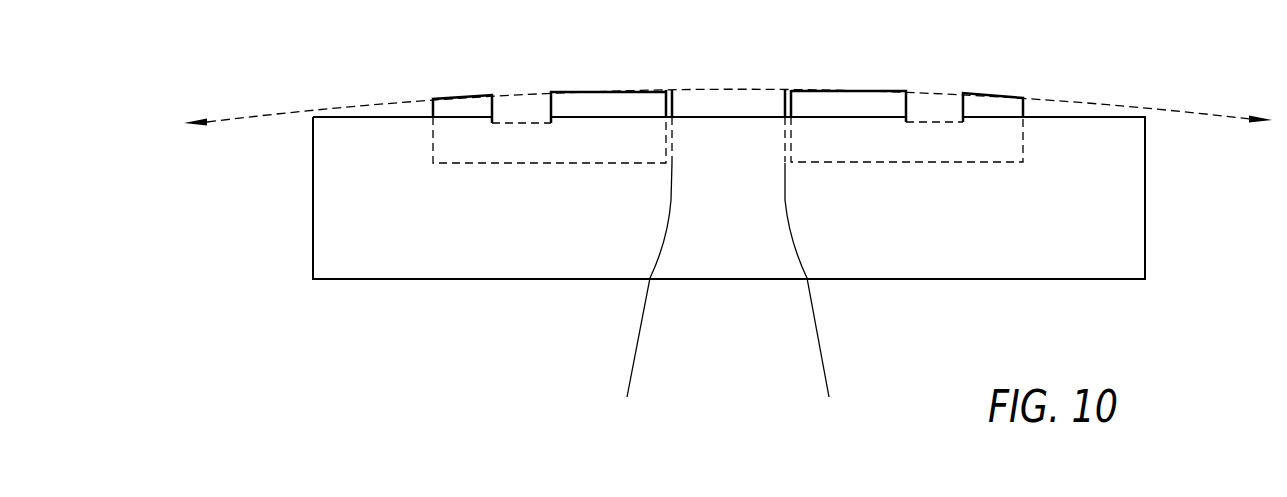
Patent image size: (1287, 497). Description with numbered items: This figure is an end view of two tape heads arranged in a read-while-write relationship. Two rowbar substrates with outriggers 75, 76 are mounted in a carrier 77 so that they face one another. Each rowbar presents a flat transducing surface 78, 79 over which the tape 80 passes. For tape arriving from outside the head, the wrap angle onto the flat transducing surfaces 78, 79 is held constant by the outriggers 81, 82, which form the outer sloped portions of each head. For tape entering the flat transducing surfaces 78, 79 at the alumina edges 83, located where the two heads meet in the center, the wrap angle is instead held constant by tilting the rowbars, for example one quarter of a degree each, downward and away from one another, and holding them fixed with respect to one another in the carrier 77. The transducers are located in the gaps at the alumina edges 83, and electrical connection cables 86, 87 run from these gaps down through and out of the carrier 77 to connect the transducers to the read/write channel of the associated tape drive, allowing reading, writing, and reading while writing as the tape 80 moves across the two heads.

The rowbar substrate and outrigger 75 is at (570, 163).
The rowbar substrate and outrigger 76 is at (883, 163).
The carrier 77 is at (1146, 247).
The flat transducing surface 78 is at (602, 92).
The flat transducing surface 79 is at (850, 91).
The tape 80 is at (1085, 102).
The outrigger 81 is at (463, 95).
The outrigger 82 is at (990, 93).
The alumina edge 83 is at (667, 92).
The electrical connection cable 86 is at (633, 362).
The electrical connection cable 87 is at (825, 362).